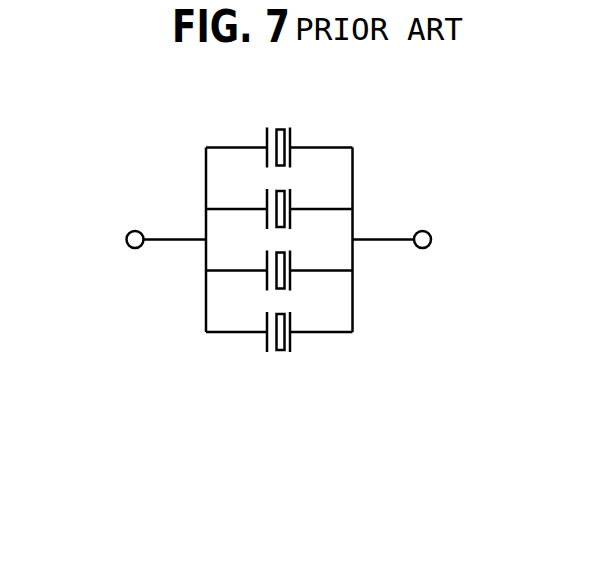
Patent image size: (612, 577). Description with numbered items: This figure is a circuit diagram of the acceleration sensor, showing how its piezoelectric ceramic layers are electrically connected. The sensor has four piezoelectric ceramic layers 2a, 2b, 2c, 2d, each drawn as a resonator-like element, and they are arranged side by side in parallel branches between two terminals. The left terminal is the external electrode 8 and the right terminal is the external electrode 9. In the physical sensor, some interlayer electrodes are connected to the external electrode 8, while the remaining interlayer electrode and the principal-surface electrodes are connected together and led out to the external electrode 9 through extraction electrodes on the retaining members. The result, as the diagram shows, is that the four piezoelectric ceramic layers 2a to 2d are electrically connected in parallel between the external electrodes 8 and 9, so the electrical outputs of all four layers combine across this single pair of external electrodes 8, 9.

The piezoelectric ceramic layer 2a is at (277, 126).
The piezoelectric ceramic layer 2b is at (291, 188).
The piezoelectric ceramic layer 2c is at (279, 292).
The piezoelectric ceramic layer 2d is at (276, 353).
The external electrode 8 is at (130, 231).
The external electrode 9 is at (424, 230).